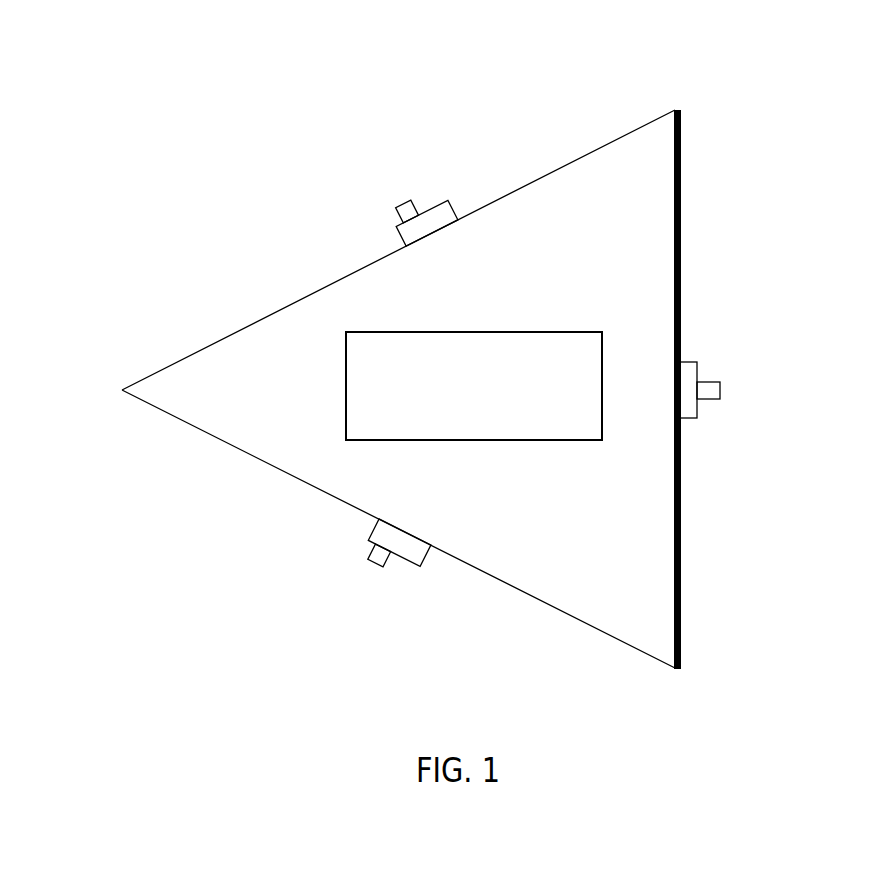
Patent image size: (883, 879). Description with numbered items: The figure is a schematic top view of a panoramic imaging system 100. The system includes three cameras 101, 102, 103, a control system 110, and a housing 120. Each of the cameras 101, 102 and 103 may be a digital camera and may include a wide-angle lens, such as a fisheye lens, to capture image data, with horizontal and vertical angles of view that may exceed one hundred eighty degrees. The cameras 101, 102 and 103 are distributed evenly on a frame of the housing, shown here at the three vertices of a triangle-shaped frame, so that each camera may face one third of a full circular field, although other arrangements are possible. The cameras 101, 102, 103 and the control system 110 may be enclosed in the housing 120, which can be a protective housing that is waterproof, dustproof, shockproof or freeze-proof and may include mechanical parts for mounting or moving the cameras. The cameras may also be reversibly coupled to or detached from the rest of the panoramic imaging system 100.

The panoramic imaging system 100 is at (728, 133).
The camera 101 is at (422, 203).
The camera 102 is at (396, 569).
The camera 103 is at (728, 390).
The control system 110 is at (474, 386).
The housing 120 is at (680, 318).